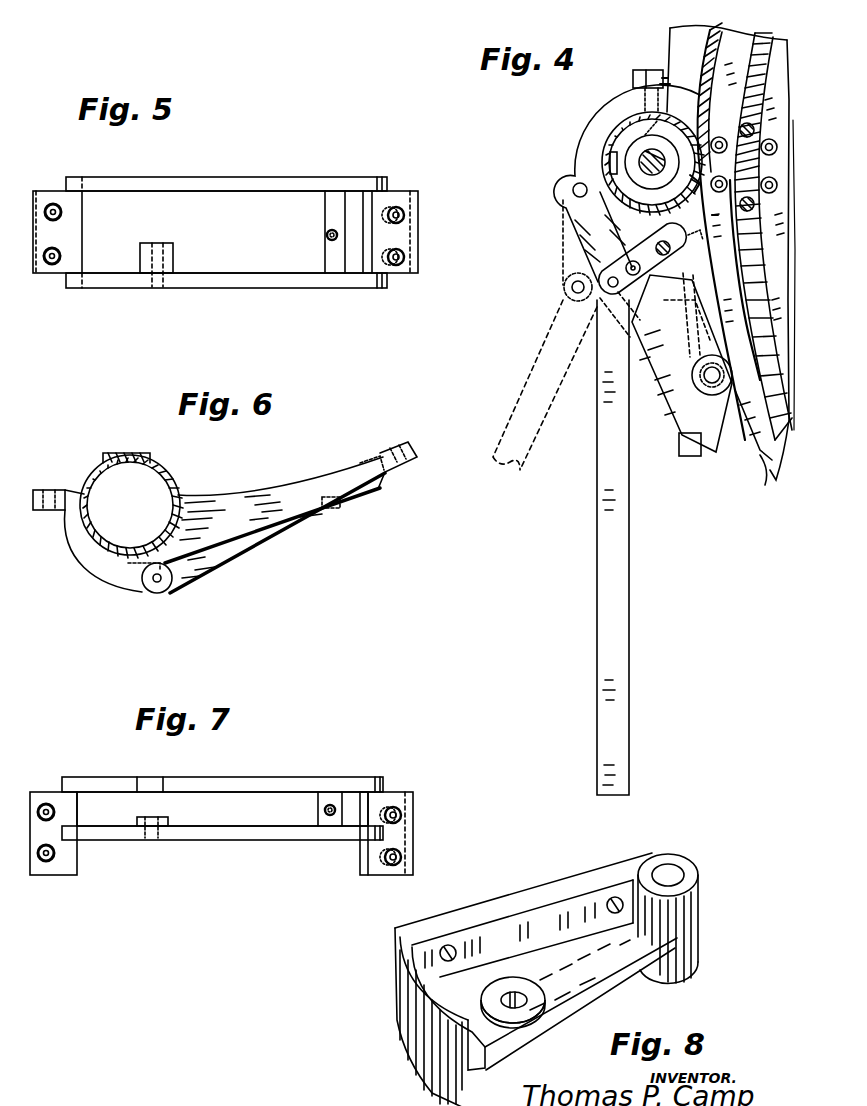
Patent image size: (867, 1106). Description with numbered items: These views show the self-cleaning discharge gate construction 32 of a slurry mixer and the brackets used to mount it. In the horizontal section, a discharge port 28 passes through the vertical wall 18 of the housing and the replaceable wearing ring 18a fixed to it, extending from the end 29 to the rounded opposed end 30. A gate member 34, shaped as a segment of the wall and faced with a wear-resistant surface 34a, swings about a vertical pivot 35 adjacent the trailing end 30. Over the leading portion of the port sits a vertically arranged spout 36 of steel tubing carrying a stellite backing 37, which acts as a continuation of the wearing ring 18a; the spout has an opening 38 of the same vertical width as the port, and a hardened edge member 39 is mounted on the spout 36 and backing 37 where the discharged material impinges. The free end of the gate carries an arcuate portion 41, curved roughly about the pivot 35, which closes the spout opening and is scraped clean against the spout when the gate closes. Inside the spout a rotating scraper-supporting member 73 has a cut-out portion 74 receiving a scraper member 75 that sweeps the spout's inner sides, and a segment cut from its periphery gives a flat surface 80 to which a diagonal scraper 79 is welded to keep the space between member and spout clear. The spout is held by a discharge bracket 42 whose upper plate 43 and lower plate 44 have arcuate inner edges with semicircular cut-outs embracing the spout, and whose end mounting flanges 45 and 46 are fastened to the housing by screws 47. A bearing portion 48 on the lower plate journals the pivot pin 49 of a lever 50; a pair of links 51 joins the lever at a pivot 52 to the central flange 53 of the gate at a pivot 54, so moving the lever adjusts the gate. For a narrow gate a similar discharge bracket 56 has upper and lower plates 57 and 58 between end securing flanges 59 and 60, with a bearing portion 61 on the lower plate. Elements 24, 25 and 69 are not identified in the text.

In FIG. 4, the vertical wall 18 is at (683, 42).
In FIG. 4, the replaceable wearing ring 18a is at (707, 56).
In FIG. 4, the mounting plate 24 is at (760, 410).
In FIG. 4, the outer wall member 25 is at (787, 448).
In FIG. 4, the discharge port 28 is at (735, 285).
In FIG. 4, the end of wearing ring portion 29 is at (696, 135).
In FIG. 4, the opposed end of port 30 is at (722, 384).
In FIG. 4, the gate construction 32 is at (572, 146).
In FIG. 4, the gate member 34 is at (692, 282).
In FIG. 8, the gate member 34 is at (615, 858).
In FIG. 8, the wear-resistant surface 34a is at (560, 887).
In FIG. 4, the vertical pivot 35 is at (712, 396).
In FIG. 6, the spout 36 is at (172, 478).
In FIG. 4, the spout 36 is at (640, 128).
In FIG. 6, the backing 37 is at (125, 453).
In FIG. 4, the backing 37 is at (716, 137).
In FIG. 4, the spout opening 38 is at (687, 180).
In FIG. 4, the hardened edge member 39 is at (721, 210).
In FIG. 8, the arcuate portion 41 is at (413, 1043).
In FIG. 5, the discharge bracket 42 is at (233, 183).
In FIG. 5, the upper plate 43 is at (310, 178).
In FIG. 6, the upper plate 43 is at (298, 506).
In FIG. 5, the lower plate 44 is at (311, 289).
In FIG. 6, the lower plate 44 is at (275, 534).
In FIG. 5, the end mounting flange 45 is at (413, 237).
In FIG. 6, the end mounting flange 45 is at (408, 438).
In FIG. 5, the end mounting flange 46 is at (33, 225).
In FIG. 6, the end mounting flange 46 is at (48, 490).
In FIG. 4, the screws 47 is at (632, 80).
In FIG. 5, the bearing portion 48 is at (173, 262).
In FIG. 6, the bearing portion 48 is at (172, 590).
In FIG. 4, the pivot pin 49 is at (573, 190).
In FIG. 4, the lever 50 is at (597, 579).
In FIG. 4, the links 51 is at (635, 310).
In FIG. 4, the pivot 52 is at (590, 296).
In FIG. 8, the central flange 53 is at (572, 998).
In FIG. 4, the pivot 54 is at (690, 248).
In FIG. 7, the discharge bracket 56 is at (265, 776).
In FIG. 7, the upper plate 57 is at (352, 778).
In FIG. 7, the lower plate 58 is at (243, 841).
In FIG. 7, the end securing flange 59 is at (415, 806).
In FIG. 7, the end securing flange 60 is at (42, 792).
In FIG. 7, the bearing portion 61 is at (168, 822).
In FIG. 4, the shaft 69 is at (647, 130).
In FIG. 4, the scraper-supporting member 73 is at (612, 142).
In FIG. 4, the cut-out portion 74 is at (612, 160).
In FIG. 4, the scraper member 75 is at (652, 170).
In FIG. 4, the scraper 79 is at (600, 199).
In FIG. 4, the surface 80 is at (605, 232).